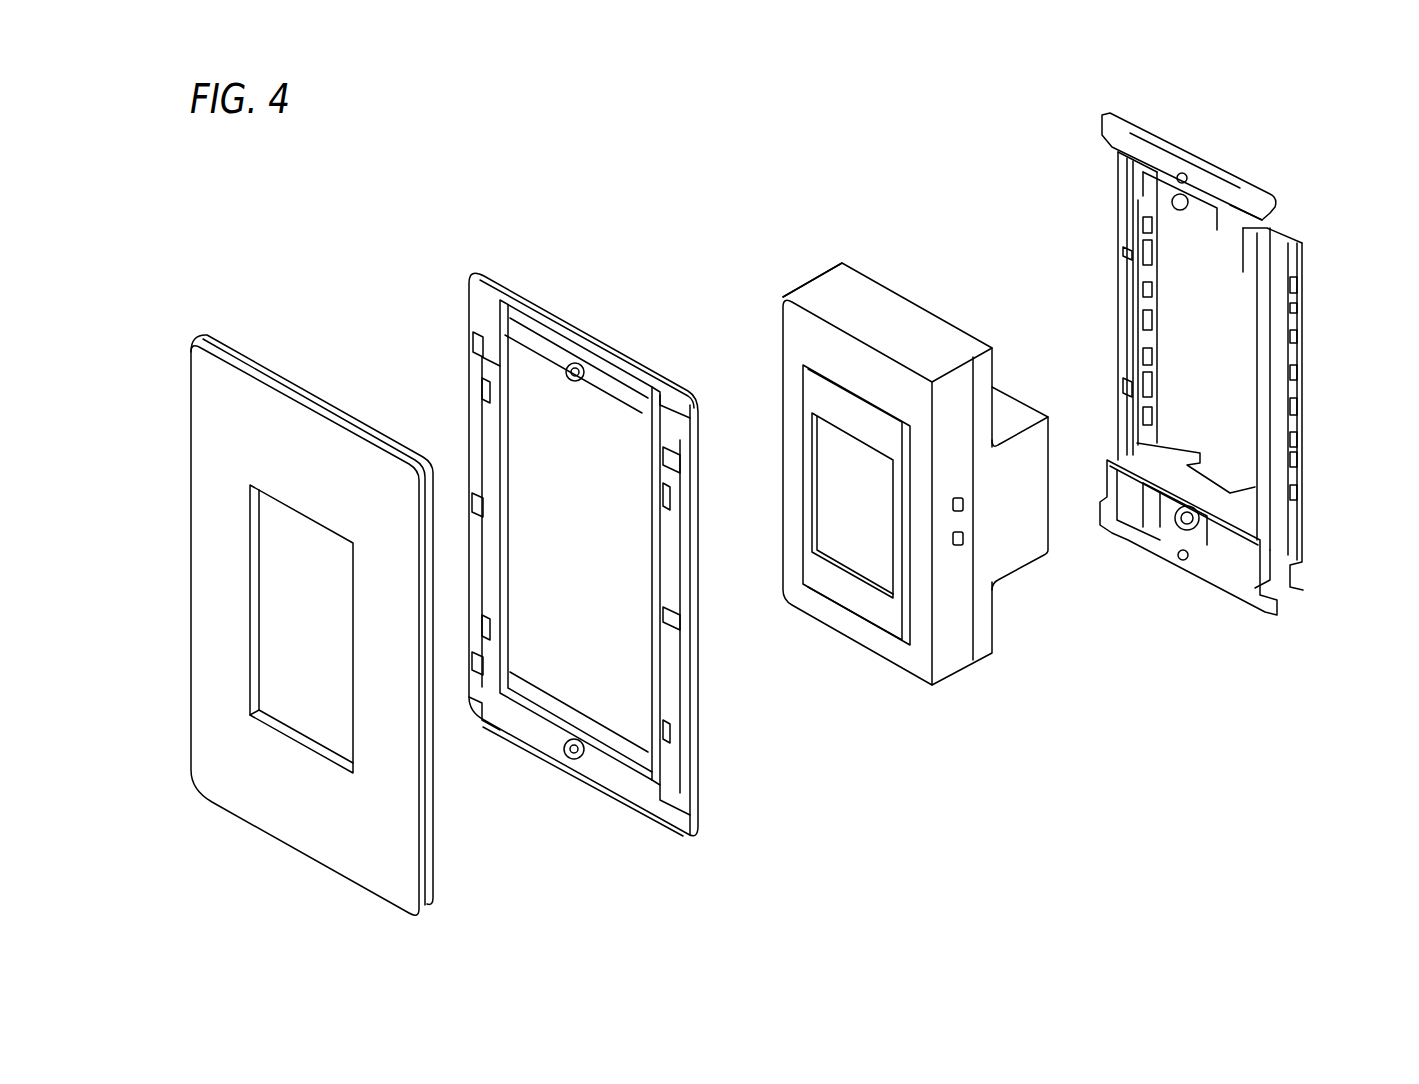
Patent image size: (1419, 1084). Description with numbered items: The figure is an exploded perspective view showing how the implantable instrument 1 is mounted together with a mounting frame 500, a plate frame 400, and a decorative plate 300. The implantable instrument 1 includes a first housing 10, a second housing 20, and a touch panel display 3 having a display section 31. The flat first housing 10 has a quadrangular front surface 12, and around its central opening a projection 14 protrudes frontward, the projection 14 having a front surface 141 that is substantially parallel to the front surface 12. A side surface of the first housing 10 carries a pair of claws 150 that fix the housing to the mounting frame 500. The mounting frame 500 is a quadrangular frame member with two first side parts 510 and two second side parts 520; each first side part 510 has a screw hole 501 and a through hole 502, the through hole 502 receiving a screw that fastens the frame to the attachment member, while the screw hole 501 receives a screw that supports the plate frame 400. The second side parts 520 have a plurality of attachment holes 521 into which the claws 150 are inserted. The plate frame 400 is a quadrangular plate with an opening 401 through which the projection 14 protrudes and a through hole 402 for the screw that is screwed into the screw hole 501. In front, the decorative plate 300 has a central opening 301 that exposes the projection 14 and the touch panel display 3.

The implantable instrument 1 is at (912, 486).
The touch panel display 3 is at (845, 458).
The first housing 10 is at (938, 690).
The front surface 12 is at (802, 325).
The projection 14 is at (868, 628).
The second housing 20 is at (1052, 414).
The display section 31 is at (845, 510).
The front surface of projection 141 is at (845, 588).
The pair of claws 150 is at (965, 504).
The decorative plate 300 is at (282, 625).
The opening of decorative plate 301 is at (265, 583).
The plate frame 400 is at (547, 530).
The opening of plate frame 401 is at (510, 397).
The through hole 402 is at (573, 383).
The mounting frame 500 is at (1204, 378).
The screw hole 501 is at (1176, 180).
The through hole 502 is at (1170, 206).
The first side part 510 is at (1130, 170).
The second side part 520 is at (1120, 295).
The attachment hole 521 is at (1152, 234).